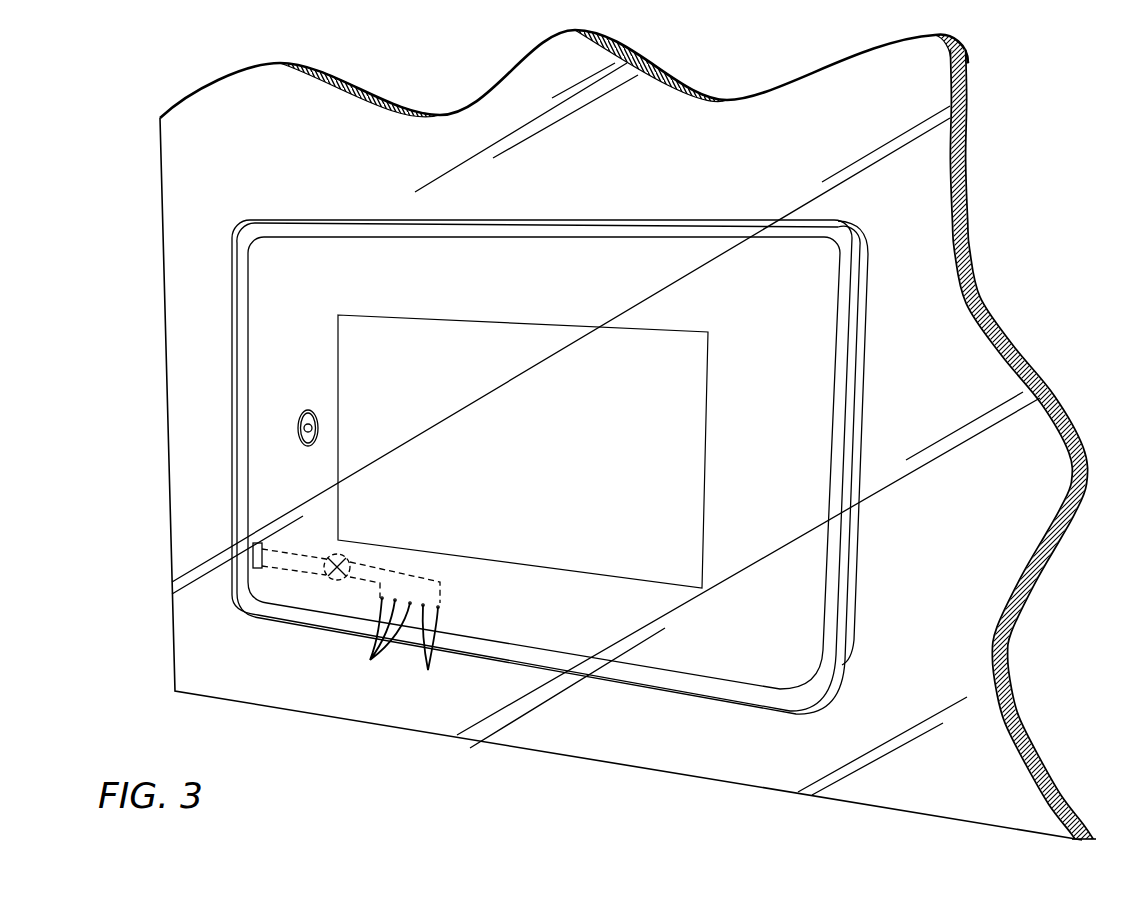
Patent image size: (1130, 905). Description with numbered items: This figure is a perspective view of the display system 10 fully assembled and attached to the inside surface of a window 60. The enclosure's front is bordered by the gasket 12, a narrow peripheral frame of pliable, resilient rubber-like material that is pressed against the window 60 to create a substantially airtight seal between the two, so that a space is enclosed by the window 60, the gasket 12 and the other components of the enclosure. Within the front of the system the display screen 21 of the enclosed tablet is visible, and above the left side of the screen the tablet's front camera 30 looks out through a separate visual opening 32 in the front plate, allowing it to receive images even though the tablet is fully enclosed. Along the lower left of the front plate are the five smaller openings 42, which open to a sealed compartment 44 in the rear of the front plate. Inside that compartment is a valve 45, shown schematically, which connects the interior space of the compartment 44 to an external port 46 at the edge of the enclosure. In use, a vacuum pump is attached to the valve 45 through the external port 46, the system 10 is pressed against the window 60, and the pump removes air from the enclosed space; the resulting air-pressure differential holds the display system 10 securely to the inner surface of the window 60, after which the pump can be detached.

The display system 10 is at (474, 412).
The gasket 12 is at (232, 253).
The display screen 21 is at (633, 535).
The front camera 30 is at (298, 428).
The visual opening 32 is at (308, 408).
The openings 42 is at (370, 660).
The sealed compartment 44 is at (412, 592).
The valve 45 is at (336, 578).
The external port 46 is at (250, 563).
The window 60 is at (940, 373).